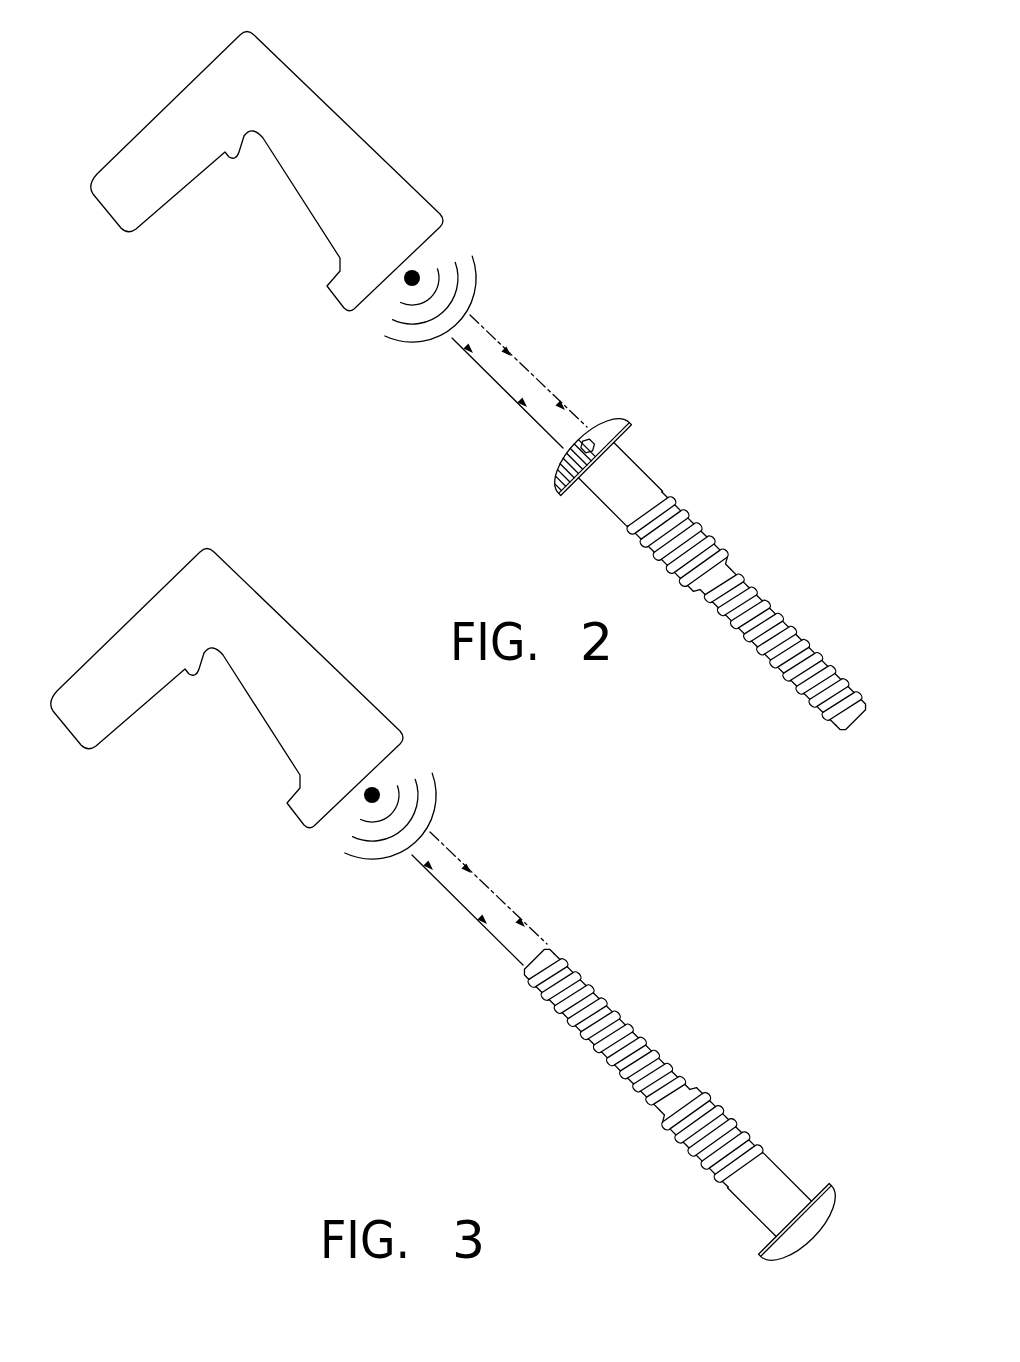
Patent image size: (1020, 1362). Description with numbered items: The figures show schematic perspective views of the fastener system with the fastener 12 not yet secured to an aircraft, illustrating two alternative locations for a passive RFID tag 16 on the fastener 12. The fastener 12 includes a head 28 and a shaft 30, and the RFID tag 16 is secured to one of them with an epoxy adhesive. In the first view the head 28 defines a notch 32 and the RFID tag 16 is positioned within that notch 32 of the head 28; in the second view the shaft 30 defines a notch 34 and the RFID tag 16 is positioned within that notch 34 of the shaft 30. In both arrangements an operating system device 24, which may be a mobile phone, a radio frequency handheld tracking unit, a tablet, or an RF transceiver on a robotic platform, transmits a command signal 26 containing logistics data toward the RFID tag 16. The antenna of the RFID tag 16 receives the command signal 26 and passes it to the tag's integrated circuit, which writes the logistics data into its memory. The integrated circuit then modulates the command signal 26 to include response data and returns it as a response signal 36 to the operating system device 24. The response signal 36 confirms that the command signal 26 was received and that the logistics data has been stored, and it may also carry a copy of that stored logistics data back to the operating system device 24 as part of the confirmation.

In FIG. 2, the fastener 12 is at (666, 555).
In FIG. 3, the fastener 12 is at (636, 1108).
In FIG. 2, the RFID tag 16 is at (527, 463).
In FIG. 3, the RFID tag 16 is at (489, 976).
In FIG. 2, the operating system device 24 is at (325, 167).
In FIG. 3, the operating system device 24 is at (213, 592).
In FIG. 2, the command signal 26 is at (508, 392).
In FIG. 3, the command signal 26 is at (473, 913).
In FIG. 2, the head 28 is at (568, 433).
In FIG. 3, the head 28 is at (833, 1177).
In FIG. 2, the shaft 30 is at (757, 583).
In FIG. 3, the shaft 30 is at (616, 1000).
In FIG. 2, the notch 32 is at (565, 443).
In FIG. 3, the notch 34 is at (518, 965).
In FIG. 2, the response signal 36 is at (532, 373).
In FIG. 3, the response signal 36 is at (490, 893).